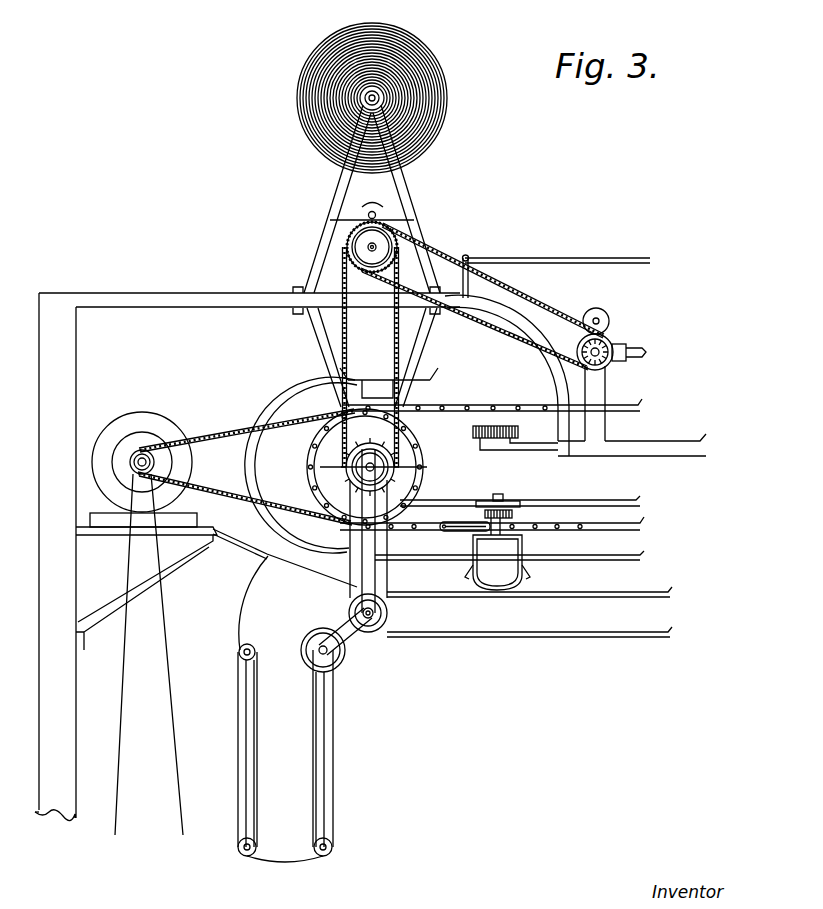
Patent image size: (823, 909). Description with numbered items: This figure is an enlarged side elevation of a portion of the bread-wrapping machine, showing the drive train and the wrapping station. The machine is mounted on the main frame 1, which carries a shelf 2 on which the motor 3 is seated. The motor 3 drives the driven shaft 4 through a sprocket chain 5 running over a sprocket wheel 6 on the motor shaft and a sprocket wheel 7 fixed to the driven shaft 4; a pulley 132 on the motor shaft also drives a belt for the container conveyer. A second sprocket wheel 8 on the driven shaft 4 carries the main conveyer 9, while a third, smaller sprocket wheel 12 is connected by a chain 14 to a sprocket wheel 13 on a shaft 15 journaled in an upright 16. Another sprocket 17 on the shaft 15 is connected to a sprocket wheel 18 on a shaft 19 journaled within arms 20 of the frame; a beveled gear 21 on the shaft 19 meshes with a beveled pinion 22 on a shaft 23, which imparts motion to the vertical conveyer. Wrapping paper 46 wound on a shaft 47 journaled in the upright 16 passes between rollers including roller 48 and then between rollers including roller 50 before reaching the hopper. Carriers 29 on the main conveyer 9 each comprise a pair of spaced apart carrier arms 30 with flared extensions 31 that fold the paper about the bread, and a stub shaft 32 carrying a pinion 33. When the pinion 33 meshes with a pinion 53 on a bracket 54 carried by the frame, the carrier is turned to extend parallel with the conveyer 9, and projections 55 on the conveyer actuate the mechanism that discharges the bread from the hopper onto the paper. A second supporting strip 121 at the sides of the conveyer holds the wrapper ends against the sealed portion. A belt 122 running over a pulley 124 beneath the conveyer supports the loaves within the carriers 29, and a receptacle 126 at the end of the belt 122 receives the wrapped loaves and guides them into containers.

The main frame 1 is at (65, 388).
The shelf 2 is at (178, 562).
The motor 3 is at (135, 420).
The driven shaft 4 is at (428, 468).
The sprocket chain 5 is at (220, 433).
The sprocket wheel 6 is at (143, 453).
The sprocket wheel 7 is at (287, 467).
The second sprocket wheel 8 is at (423, 450).
The main conveyer 9 is at (458, 405).
The third sprocket wheel 12 is at (320, 517).
The sprocket wheel 13 is at (347, 237).
The chain 14 is at (338, 353).
The shaft 15 is at (367, 248).
The upright 16 is at (407, 203).
The sprocket 17 is at (397, 238).
The sprocket wheel 18 is at (600, 372).
The shaft 19 is at (608, 368).
The arms 20 is at (593, 425).
The beveled gear 21 is at (577, 347).
The beveled pinion 22 is at (612, 347).
The shaft 23 is at (638, 352).
The carrier 29 is at (365, 378).
The carrier arms 30 is at (527, 565).
The flared extensions 31 is at (463, 572).
The stub shaft 32 is at (498, 518).
The pinion 33 is at (505, 505).
The wrapping paper 46 is at (433, 98).
The shaft 47 is at (378, 105).
The roller 48 is at (373, 207).
The roller 50 is at (593, 307).
The pinion 53 is at (488, 440).
The bracket 54 is at (540, 452).
The projections 55 is at (445, 528).
The second supporting strip 121 is at (328, 547).
The belt 122 is at (495, 595).
The pulley 124 is at (380, 617).
The receptacle 126 is at (258, 607).
The pulley 132 is at (153, 464).